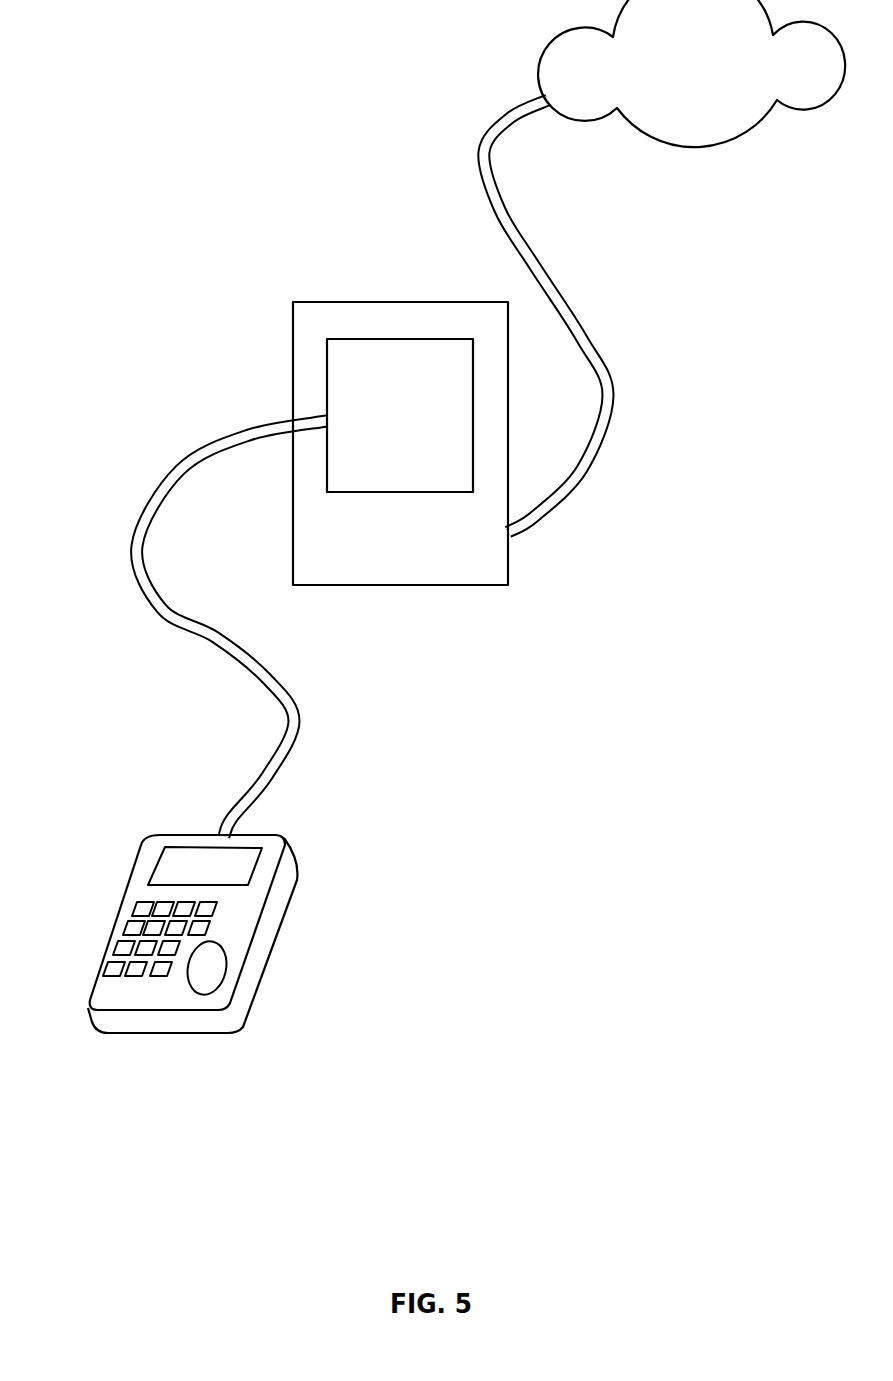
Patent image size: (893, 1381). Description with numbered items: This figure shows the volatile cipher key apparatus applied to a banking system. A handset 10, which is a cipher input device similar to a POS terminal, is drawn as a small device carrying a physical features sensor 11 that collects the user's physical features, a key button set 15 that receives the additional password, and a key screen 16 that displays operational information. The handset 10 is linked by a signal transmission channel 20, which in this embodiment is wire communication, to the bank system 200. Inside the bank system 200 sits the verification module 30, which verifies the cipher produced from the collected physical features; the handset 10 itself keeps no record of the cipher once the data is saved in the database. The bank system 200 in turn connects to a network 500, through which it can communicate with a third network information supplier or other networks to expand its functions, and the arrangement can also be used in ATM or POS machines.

The handset 10 is at (209, 885).
The physical features sensor 11 is at (203, 972).
The key button set 15 is at (126, 946).
The key screen 16 is at (233, 868).
The signal transmission channel 20 is at (264, 768).
The verification module 30 is at (400, 415).
The bank system 200 is at (400, 443).
The network 500 is at (691, 73).